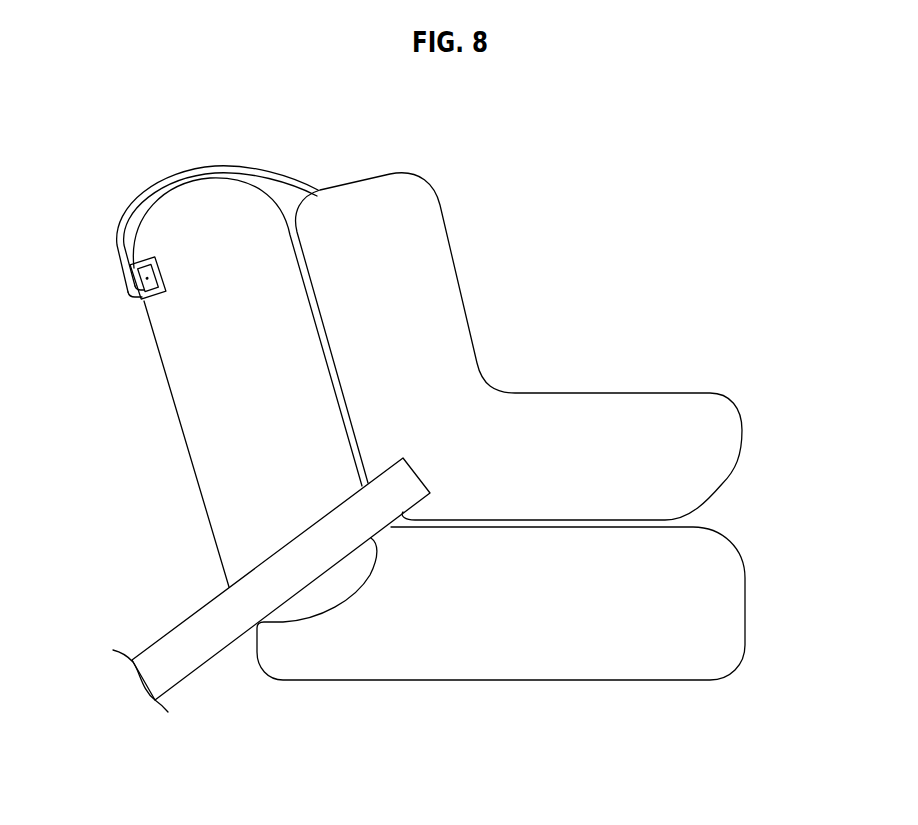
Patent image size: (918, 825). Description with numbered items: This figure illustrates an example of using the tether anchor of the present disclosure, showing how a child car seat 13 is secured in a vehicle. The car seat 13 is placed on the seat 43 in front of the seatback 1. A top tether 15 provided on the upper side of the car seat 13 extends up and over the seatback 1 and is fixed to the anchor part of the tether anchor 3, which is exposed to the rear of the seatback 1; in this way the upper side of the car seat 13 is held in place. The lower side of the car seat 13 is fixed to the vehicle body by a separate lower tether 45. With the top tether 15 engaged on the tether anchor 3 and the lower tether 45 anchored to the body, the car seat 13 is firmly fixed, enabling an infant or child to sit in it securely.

The seatback 1 is at (217, 447).
The tether anchor 3 is at (122, 295).
The car seat 13 is at (427, 330).
The top tether 15 is at (280, 180).
The seat 43 is at (762, 607).
The lower tether 45 is at (195, 643).